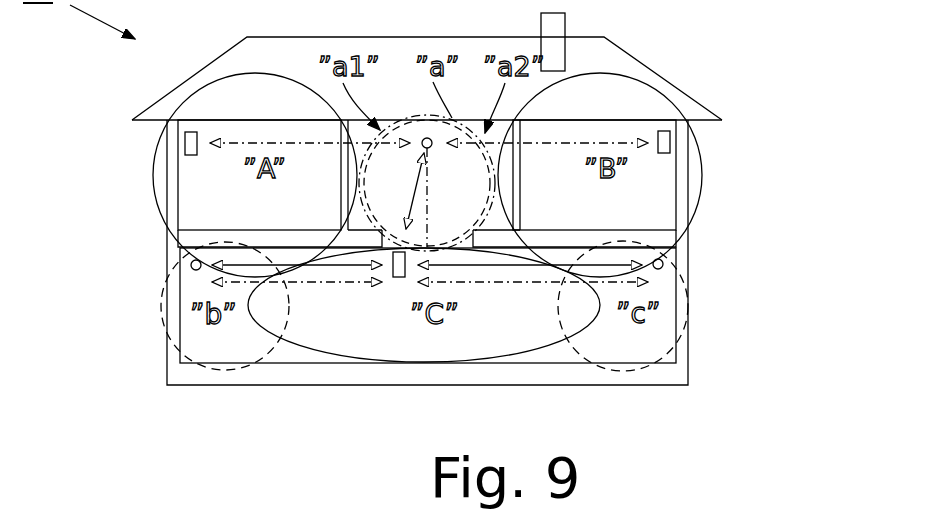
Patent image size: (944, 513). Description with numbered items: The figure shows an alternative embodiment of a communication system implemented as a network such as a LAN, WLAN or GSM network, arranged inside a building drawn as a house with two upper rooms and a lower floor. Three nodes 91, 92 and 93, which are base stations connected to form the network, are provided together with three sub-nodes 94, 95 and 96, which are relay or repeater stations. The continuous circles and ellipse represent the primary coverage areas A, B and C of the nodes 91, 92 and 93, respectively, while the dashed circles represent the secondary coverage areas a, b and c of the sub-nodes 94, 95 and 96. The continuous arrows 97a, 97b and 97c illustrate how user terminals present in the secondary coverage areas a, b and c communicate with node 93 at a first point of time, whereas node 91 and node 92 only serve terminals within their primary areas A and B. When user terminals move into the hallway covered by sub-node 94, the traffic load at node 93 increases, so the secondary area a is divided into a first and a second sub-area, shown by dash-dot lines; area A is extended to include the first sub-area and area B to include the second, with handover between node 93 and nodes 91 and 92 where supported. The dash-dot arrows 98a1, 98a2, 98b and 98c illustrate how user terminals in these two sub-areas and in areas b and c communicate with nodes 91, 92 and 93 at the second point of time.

The node 91 is at (185, 136).
The node 92 is at (670, 136).
The node 93 is at (400, 277).
The sub-node 94 is at (427, 138).
The sub-node 95 is at (191, 265).
The sub-node 96 is at (663, 262).
The continuous arrow 97a is at (455, 196).
The continuous arrow 97b is at (285, 266).
The continuous arrow 97c is at (572, 267).
The dash-dot arrow 98a1 is at (283, 143).
The dash-dot arrow 98a2 is at (580, 143).
The dash-dot arrow 98b is at (297, 284).
The dash-dot arrow 98c is at (547, 284).